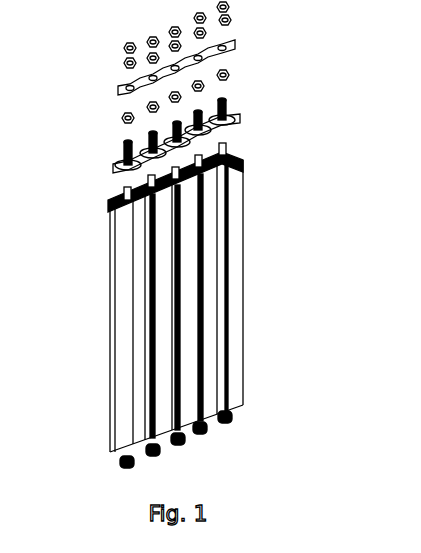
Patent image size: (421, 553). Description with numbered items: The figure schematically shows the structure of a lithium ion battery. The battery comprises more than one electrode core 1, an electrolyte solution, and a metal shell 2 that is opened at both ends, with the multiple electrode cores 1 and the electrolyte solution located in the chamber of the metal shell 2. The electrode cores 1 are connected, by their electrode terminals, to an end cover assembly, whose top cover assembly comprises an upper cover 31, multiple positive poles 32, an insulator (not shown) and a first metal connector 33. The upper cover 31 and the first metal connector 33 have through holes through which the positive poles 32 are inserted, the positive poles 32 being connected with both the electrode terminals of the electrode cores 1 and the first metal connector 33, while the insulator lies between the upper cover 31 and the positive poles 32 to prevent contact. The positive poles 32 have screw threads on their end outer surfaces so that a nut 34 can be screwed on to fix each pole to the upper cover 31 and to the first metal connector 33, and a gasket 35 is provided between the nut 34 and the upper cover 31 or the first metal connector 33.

The electrode core 1 is at (238, 152).
The metal shell 2 is at (237, 217).
The upper cover 31 is at (240, 118).
The positive pole 32 is at (225, 103).
The first metal connector 33 is at (118, 88).
The nut 34 is at (122, 45).
The gasket 35 is at (233, 20).